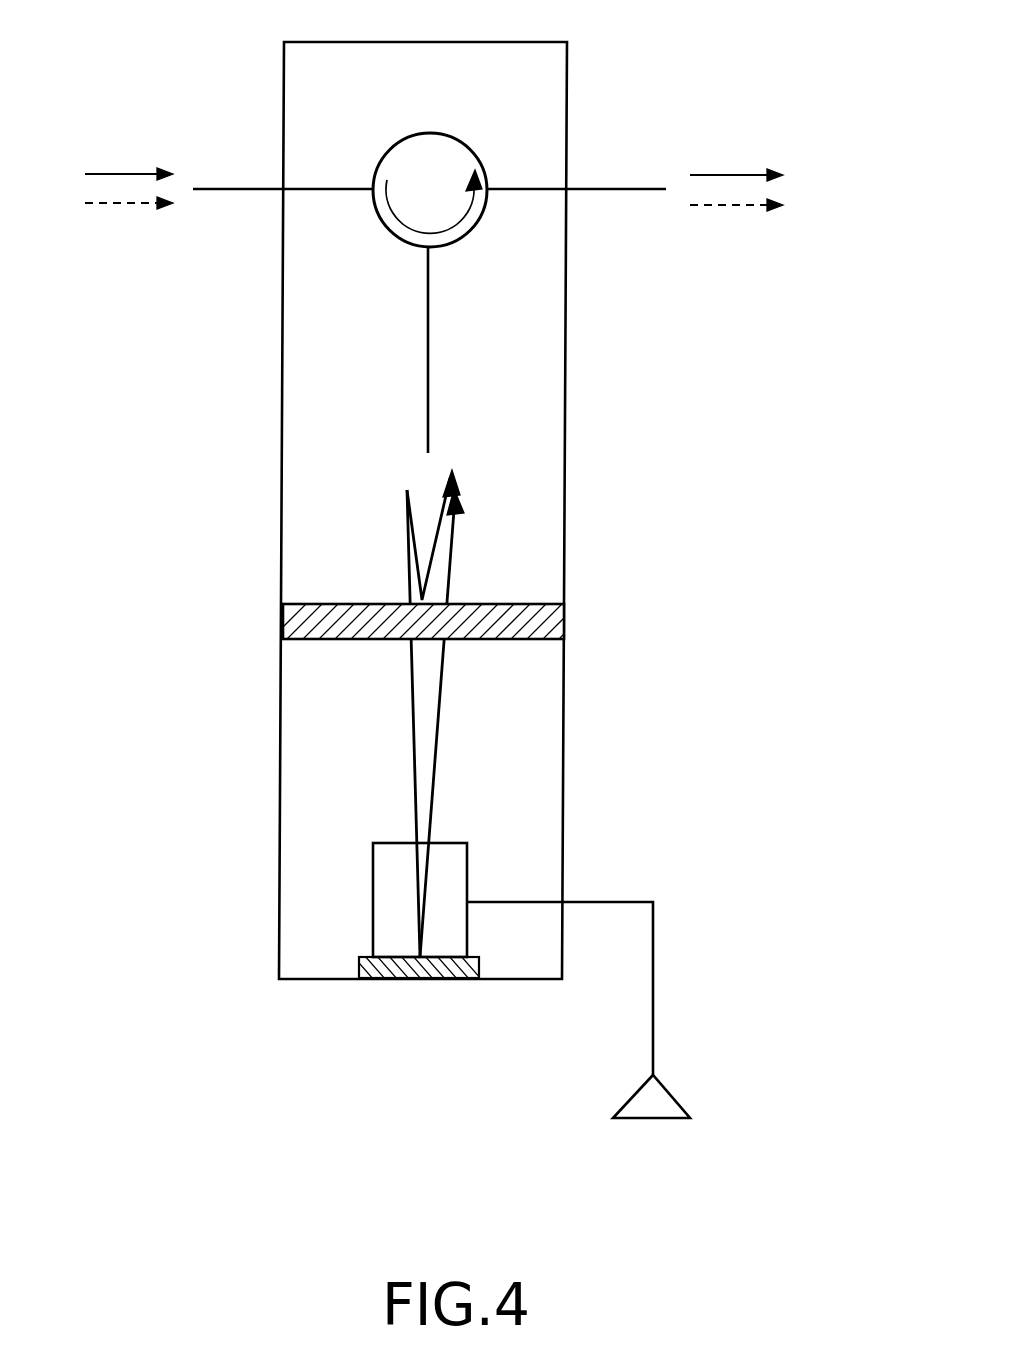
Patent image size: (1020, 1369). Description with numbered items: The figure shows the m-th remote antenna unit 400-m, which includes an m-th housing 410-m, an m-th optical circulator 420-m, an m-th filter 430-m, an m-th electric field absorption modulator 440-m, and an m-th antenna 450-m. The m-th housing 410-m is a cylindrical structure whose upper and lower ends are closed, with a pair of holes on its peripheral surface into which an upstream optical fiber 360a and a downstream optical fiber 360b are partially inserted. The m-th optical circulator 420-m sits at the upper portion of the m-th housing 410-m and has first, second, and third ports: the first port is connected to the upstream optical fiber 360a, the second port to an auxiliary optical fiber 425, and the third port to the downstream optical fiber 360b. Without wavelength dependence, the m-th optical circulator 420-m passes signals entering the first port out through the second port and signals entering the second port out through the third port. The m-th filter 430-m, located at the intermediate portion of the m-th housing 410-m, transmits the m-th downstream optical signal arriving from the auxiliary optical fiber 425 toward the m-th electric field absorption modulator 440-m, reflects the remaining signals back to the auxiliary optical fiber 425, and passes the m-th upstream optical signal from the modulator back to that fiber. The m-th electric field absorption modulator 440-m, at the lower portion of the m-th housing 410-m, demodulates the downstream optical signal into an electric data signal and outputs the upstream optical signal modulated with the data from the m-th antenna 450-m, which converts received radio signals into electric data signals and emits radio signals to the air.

The m-th remote antenna unit 400-m is at (427, 1127).
The m-th housing 410-m is at (565, 453).
The upstream optical fiber 360a is at (237, 188).
The downstream optical fiber 360b is at (607, 188).
The m-th optical circulator 420-m is at (388, 233).
The auxiliary optical fiber 425 is at (429, 347).
The m-th filter 430-m is at (507, 600).
The m-th electric field absorption modulator 440-m is at (475, 834).
The m-th antenna 450-m is at (670, 1093).